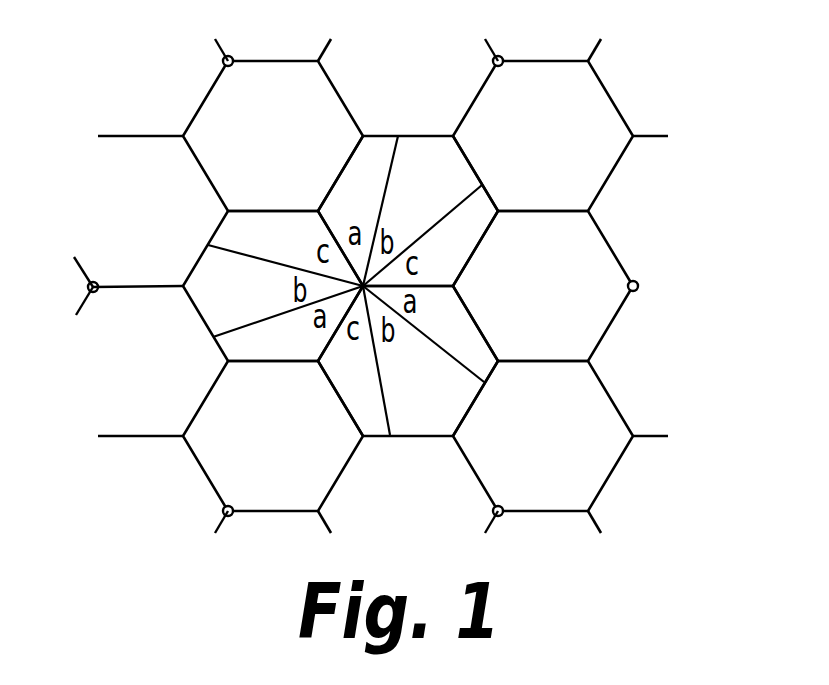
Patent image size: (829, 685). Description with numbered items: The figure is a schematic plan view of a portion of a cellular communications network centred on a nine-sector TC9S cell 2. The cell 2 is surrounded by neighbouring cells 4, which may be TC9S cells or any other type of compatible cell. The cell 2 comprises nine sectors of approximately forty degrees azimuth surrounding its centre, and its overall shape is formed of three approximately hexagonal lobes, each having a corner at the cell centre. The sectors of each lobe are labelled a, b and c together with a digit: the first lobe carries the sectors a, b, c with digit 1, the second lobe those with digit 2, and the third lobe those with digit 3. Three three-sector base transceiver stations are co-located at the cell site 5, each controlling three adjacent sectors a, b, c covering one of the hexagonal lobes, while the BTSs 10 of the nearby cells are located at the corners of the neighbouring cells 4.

The first hexagonal lobe sectors 1 is at (408, 211).
The nine-sector TC9S cell 2 is at (624, 181).
The third hexagonal lobe sectors 3 is at (273, 288).
The neighbouring cells 4 is at (221, 136).
The cell site 5 is at (543, 286).
The BTSs of nearby cells 10 is at (236, 54).